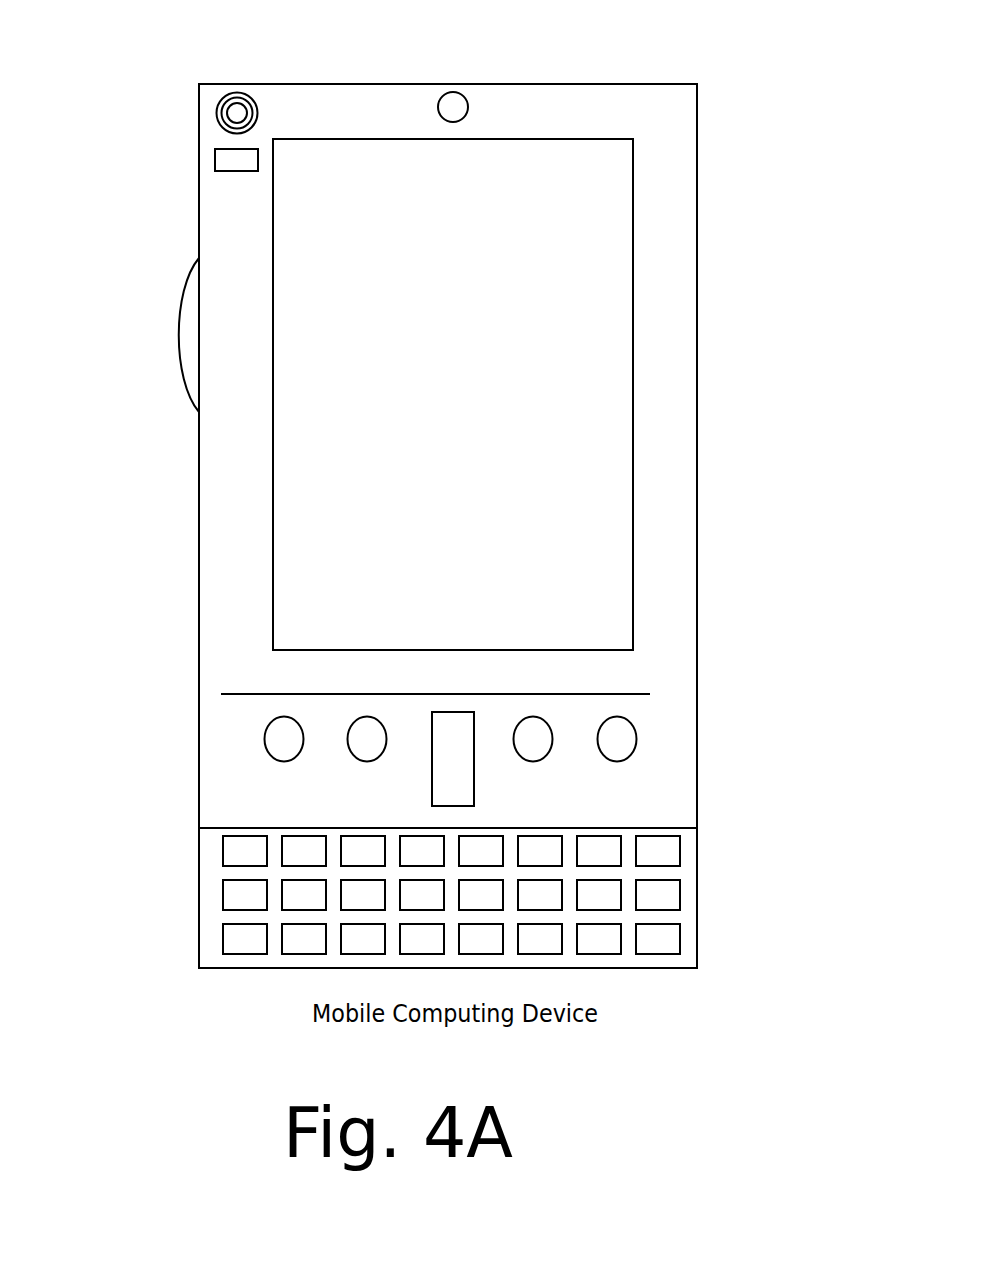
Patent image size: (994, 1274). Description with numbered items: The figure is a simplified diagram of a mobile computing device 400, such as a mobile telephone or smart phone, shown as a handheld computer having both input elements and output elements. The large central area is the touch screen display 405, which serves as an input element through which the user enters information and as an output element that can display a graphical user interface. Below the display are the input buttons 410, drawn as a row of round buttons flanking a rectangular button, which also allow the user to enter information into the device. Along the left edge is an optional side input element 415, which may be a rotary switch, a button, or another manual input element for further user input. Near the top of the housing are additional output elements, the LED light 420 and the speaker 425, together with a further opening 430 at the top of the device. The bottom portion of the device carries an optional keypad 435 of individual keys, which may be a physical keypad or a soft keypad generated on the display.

The mobile computing device 400 is at (685, 102).
The touch screen display 405 is at (385, 563).
The input buttons 410 is at (452, 766).
The side input element 415 is at (190, 333).
The LED light 420 is at (216, 165).
The speaker 425 is at (217, 113).
The speaker 430 is at (465, 105).
The keypad 435 is at (209, 943).